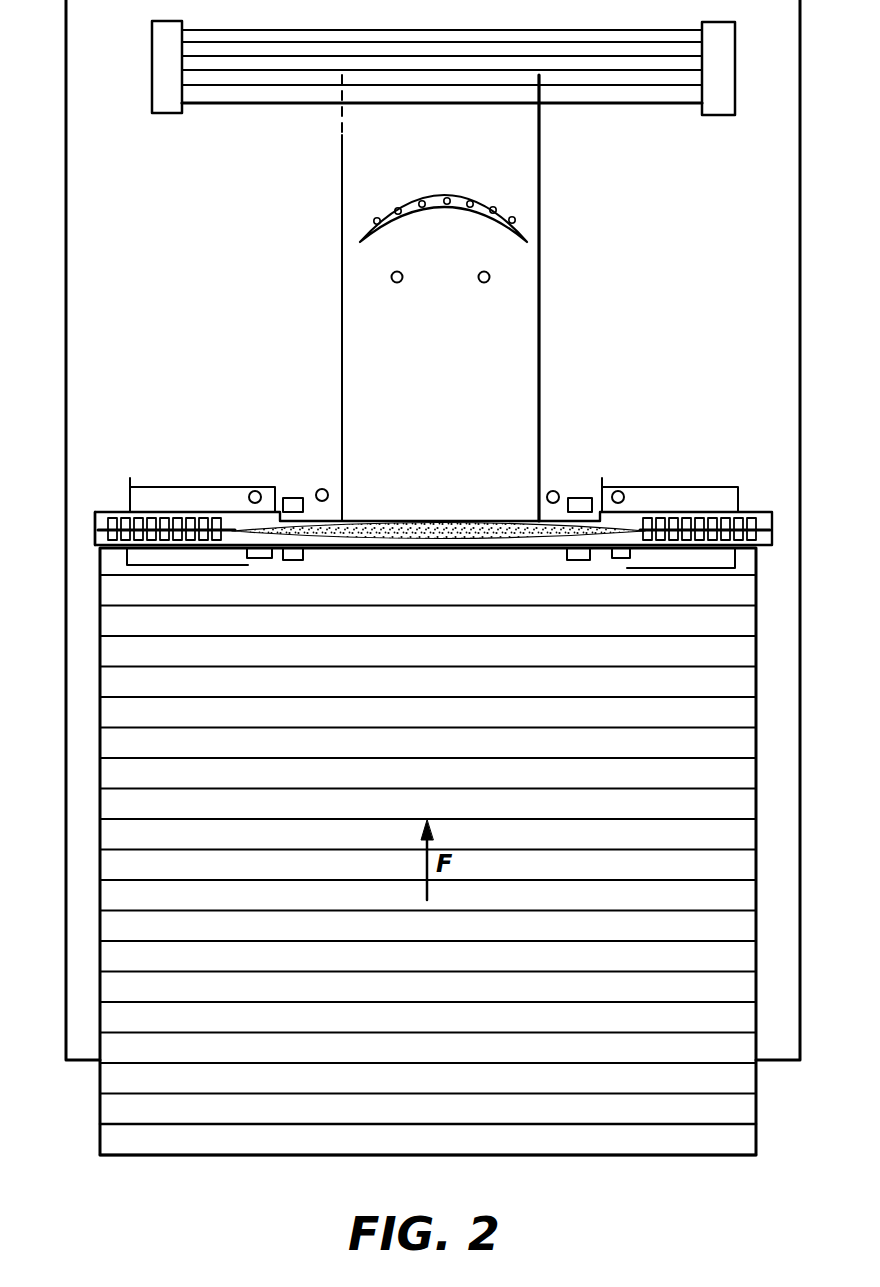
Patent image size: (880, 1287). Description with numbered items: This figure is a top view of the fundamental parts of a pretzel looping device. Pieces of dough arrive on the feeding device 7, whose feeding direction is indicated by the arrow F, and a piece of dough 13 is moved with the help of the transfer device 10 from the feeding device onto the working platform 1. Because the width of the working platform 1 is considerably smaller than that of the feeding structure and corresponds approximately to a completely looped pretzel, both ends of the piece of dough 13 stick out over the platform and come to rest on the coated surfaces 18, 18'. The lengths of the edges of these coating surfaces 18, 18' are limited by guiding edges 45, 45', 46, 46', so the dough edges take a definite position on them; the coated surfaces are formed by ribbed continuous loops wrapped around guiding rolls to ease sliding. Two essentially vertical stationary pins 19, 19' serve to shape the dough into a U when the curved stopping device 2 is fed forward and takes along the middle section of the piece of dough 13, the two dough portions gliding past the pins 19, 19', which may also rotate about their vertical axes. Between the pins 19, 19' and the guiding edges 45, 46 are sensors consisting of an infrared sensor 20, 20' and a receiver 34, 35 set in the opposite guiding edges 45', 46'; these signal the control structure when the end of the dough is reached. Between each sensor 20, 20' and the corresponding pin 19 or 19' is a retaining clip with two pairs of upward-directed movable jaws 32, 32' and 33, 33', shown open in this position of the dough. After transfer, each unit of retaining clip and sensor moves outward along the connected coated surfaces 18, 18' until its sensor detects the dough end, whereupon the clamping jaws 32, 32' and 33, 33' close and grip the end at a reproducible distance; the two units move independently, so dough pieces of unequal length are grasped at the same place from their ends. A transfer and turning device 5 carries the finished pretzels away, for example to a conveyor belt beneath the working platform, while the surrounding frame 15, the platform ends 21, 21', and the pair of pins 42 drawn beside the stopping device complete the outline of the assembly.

The working platform 1 is at (540, 358).
The curved stopping device 2 is at (507, 209).
The transfer and turning device 5 is at (452, 17).
The feeding device 7 is at (728, 1112).
The transfer device 10 is at (436, 555).
The piece of dough 13 is at (430, 521).
The frame 15 is at (775, 802).
The coated surface 18 is at (705, 489).
The coated surface 18' is at (166, 489).
The stationary pin 19 is at (557, 471).
The stationary pin 19' is at (329, 470).
The infrared sensor 20 is at (641, 471).
The infrared sensor 20' is at (238, 471).
The plate end 21 is at (478, 531).
The plate end 21' is at (56, 537).
The movable jaw 32 is at (284, 475).
The movable jaw 32' is at (312, 593).
The movable jaw 33 is at (592, 475).
The movable jaw 33' is at (572, 593).
The receiver 34 is at (619, 558).
The receiver 35 is at (258, 558).
The pin 42 is at (391, 277).
The guiding edge 45 is at (723, 494).
The guiding edge 45' is at (681, 592).
The guiding edge 46 is at (145, 495).
The guiding edge 46' is at (187, 592).